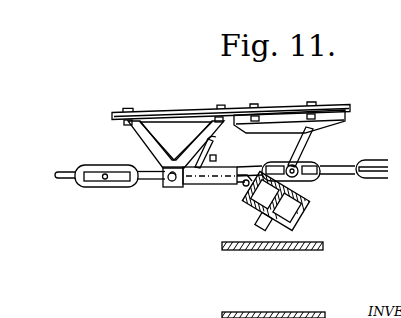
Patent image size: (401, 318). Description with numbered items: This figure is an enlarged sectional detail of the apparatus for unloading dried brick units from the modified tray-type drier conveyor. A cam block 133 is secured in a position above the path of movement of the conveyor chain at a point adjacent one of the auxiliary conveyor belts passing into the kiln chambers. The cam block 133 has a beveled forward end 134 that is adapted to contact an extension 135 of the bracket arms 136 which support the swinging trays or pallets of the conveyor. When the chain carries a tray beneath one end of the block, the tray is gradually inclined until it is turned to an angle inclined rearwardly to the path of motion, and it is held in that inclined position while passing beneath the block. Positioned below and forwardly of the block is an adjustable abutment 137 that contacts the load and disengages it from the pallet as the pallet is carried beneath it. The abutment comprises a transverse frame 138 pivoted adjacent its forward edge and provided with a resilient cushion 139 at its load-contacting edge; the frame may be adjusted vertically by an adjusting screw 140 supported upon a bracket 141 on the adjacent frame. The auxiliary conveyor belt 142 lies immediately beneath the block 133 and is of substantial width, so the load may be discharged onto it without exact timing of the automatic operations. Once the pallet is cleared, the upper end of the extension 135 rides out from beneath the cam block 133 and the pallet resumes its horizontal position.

The cam block 133 is at (292, 120).
The beveled forward end 134 is at (330, 121).
The extension 135 is at (312, 139).
The bracket arms 136 is at (301, 190).
The adjustable abutment 137 is at (200, 188).
The transverse frame 138 is at (237, 186).
The resilient cushion 139 is at (242, 199).
The adjusting screw 140 is at (217, 160).
The bracket 141 is at (204, 158).
The auxiliary conveyor belt 142 is at (312, 246).